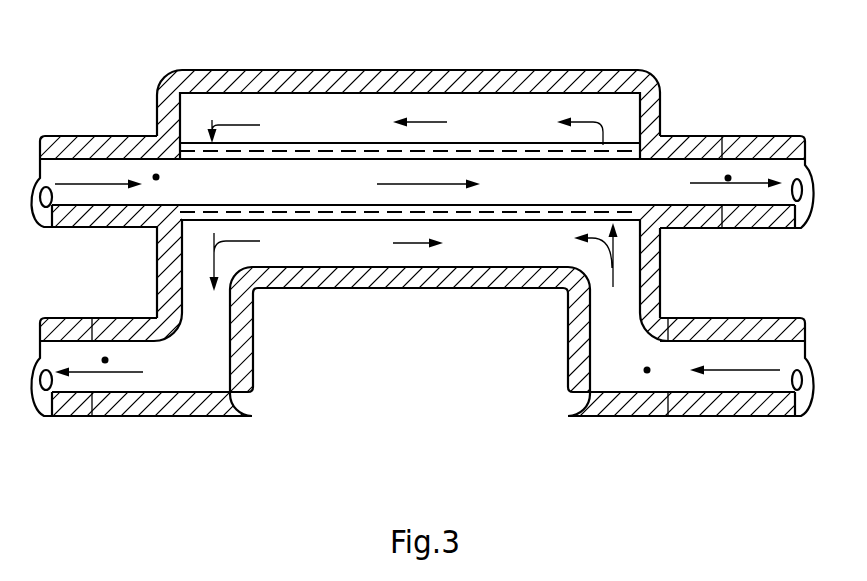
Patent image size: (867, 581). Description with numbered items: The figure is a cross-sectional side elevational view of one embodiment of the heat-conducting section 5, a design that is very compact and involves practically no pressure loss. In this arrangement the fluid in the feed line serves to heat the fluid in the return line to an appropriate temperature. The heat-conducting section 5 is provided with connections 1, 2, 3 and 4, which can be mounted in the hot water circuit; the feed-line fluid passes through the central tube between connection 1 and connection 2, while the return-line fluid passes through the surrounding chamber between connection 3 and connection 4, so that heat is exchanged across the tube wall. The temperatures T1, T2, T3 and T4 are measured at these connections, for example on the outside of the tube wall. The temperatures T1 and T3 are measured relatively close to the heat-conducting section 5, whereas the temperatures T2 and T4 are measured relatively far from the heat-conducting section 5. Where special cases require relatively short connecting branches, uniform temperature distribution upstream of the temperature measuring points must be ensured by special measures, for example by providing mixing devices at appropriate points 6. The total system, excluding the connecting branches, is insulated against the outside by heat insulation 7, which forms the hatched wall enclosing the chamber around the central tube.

The connection 1 is at (44, 135).
The connection 2 is at (798, 133).
The connection 3 is at (798, 418).
The connection 4 is at (45, 423).
The heat-conducting section 5 is at (327, 207).
The points for mixing devices 6 is at (598, 175).
The heat insulation 7 is at (268, 77).
The temperature T1 is at (155, 175).
The temperature T2 is at (726, 175).
The temperature T3 is at (649, 366).
The temperature T4 is at (106, 355).